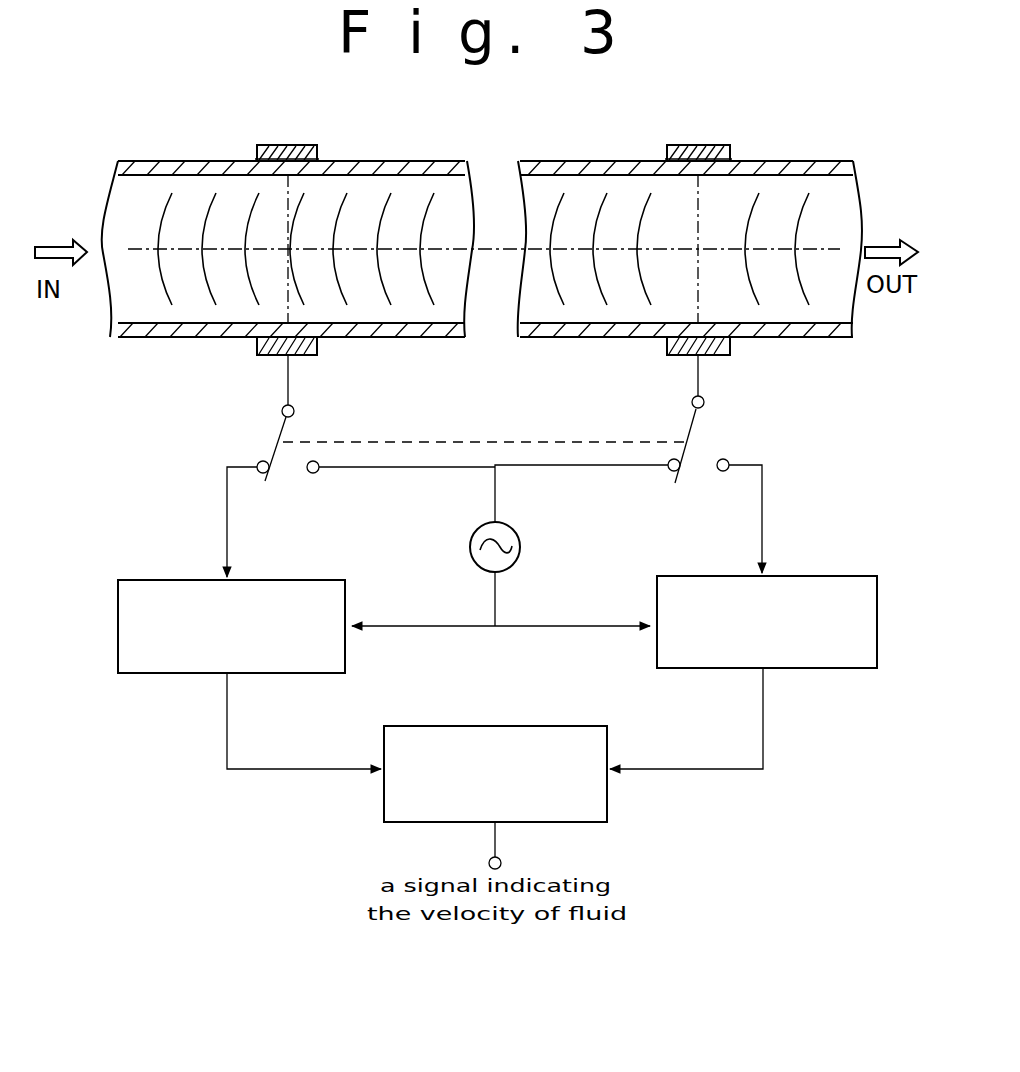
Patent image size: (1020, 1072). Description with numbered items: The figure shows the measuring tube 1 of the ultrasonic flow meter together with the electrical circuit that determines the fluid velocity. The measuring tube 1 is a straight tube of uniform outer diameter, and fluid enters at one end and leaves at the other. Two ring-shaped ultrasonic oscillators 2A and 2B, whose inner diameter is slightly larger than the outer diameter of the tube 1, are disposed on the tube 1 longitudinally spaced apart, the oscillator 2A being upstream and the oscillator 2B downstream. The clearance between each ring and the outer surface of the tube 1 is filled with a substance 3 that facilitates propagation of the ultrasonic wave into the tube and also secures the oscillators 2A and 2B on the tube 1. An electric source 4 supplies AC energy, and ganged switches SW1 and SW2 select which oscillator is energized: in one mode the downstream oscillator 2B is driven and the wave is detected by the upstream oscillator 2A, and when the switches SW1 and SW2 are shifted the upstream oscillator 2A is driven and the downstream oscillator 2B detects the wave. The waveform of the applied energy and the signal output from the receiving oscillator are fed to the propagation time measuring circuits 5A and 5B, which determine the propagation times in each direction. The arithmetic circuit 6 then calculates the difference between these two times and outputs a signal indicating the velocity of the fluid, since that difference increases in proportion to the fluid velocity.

The measuring tube 1 is at (170, 161).
The upstream ultrasonic oscillator 2A is at (320, 147).
The downstream ultrasonic oscillator 2B is at (730, 147).
The substance 3 is at (256, 160).
The ganged switch SW1 is at (276, 421).
The ganged switch SW2 is at (709, 413).
The electric source 4 is at (521, 533).
The propagation time measuring circuit 5A is at (152, 580).
The propagation time measuring circuit 5B is at (815, 576).
The arithmetic circuit 6 is at (573, 726).